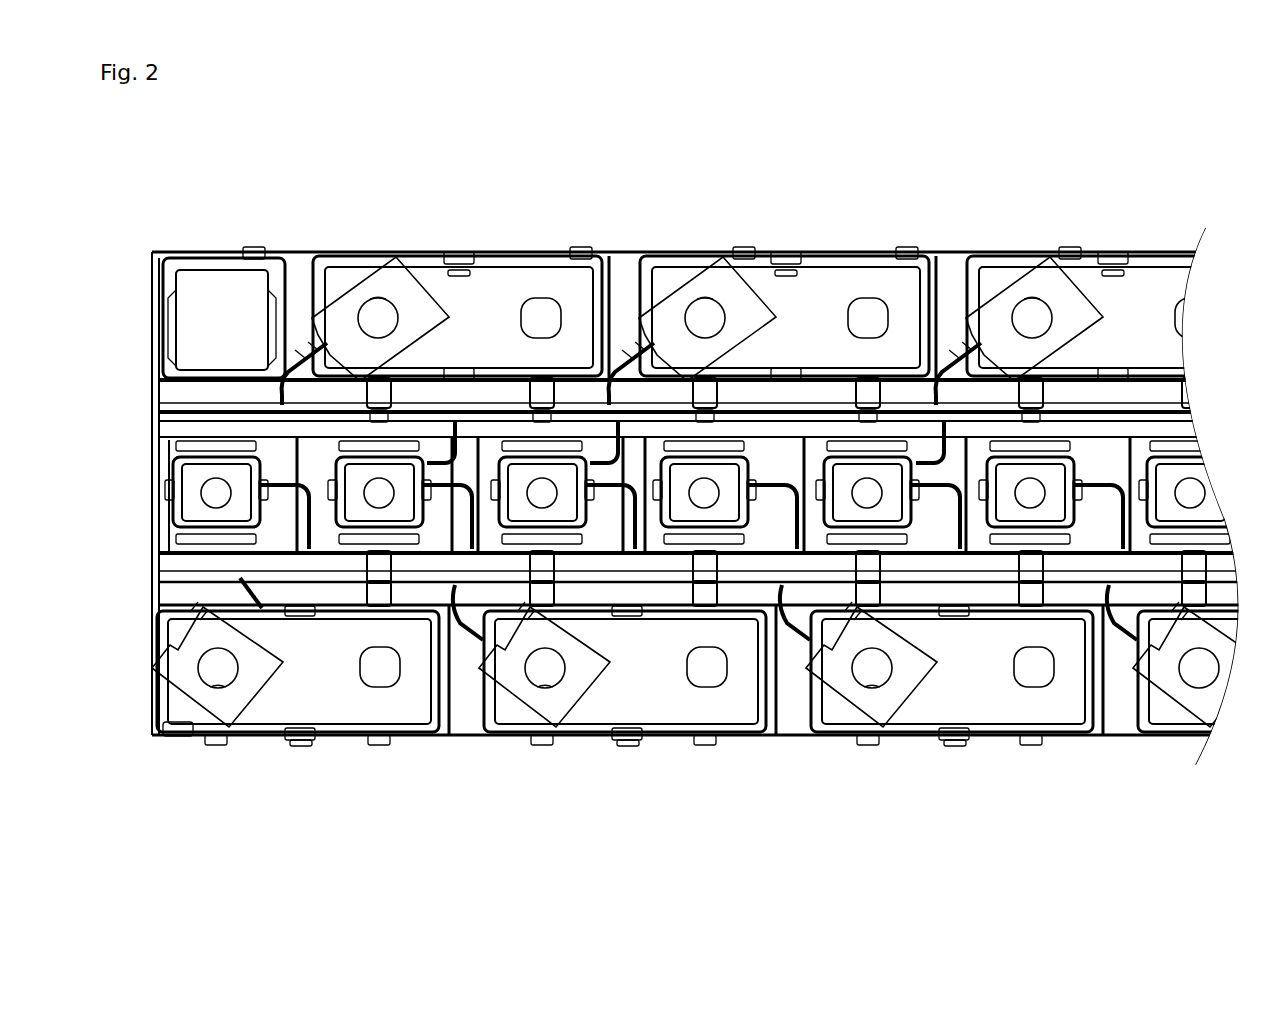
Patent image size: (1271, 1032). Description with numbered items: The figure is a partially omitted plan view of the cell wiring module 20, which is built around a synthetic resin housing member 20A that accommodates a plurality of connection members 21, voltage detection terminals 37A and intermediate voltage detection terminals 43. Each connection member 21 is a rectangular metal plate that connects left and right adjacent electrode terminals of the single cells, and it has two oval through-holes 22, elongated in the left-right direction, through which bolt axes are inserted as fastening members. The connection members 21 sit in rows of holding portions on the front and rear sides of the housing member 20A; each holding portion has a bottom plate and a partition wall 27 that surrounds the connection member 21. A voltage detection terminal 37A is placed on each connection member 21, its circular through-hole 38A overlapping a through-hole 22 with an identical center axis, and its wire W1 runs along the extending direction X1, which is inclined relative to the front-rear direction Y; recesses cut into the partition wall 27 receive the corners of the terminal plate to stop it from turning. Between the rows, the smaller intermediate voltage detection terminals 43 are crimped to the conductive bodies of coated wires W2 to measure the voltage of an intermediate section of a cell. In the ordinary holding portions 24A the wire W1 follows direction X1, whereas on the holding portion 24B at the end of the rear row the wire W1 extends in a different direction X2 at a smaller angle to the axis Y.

The cell wiring module 20 is at (852, 210).
The housing member 20A is at (150, 452).
The connection member 21 is at (481, 288).
The through-hole 22 is at (378, 299).
The holding portion 24A is at (449, 218).
The holding portion 24B is at (299, 758).
The partition wall 27 is at (156, 712).
The voltage detection terminal 37A is at (399, 285).
The circular through-hole 38A is at (372, 298).
The intermediate voltage detection terminal 43 is at (525, 468).
The wire W1 is at (306, 358).
The wire W2 is at (302, 522).
The extending direction X1 is at (612, 378).
The direction X2 is at (290, 588).
The front-rear direction Y is at (664, 350).